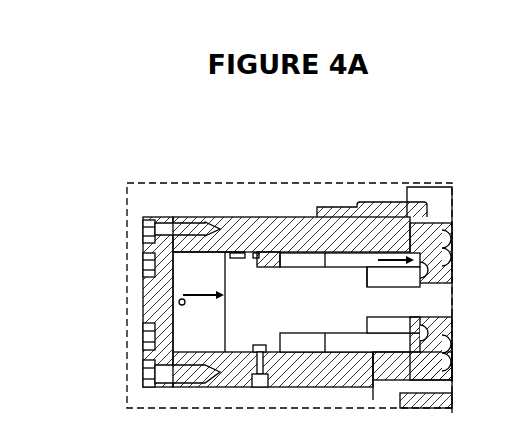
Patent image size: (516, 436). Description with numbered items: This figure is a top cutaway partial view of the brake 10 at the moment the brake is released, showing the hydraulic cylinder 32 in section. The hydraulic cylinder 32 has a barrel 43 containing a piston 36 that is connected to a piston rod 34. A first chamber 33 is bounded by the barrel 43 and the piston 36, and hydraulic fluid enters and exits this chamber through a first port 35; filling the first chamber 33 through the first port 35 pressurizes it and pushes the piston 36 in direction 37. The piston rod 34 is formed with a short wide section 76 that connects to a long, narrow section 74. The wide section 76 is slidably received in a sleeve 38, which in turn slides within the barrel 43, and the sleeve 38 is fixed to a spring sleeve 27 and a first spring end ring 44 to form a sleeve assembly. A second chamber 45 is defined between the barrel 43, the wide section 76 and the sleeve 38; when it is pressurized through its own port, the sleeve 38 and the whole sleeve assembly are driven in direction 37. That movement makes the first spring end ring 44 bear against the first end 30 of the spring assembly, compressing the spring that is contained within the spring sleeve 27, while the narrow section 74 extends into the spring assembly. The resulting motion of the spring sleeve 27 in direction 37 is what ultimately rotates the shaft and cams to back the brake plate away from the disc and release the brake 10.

The brake 10 is at (112, 148).
The spring sleeve 27 is at (442, 220).
The first end of spring assembly 30 is at (450, 355).
The hydraulic cylinder 32 is at (233, 205).
The first chamber 33 is at (172, 287).
The piston rod 34 is at (312, 303).
The first port 35 is at (180, 302).
The piston 36 is at (220, 323).
The direction 37 is at (197, 290).
The sleeve 38 is at (347, 253).
The barrel 43 is at (247, 217).
The first spring end ring 44 is at (427, 217).
The second chamber 45 is at (293, 253).
The narrow section 74 is at (372, 338).
The wide section 76 is at (311, 338).